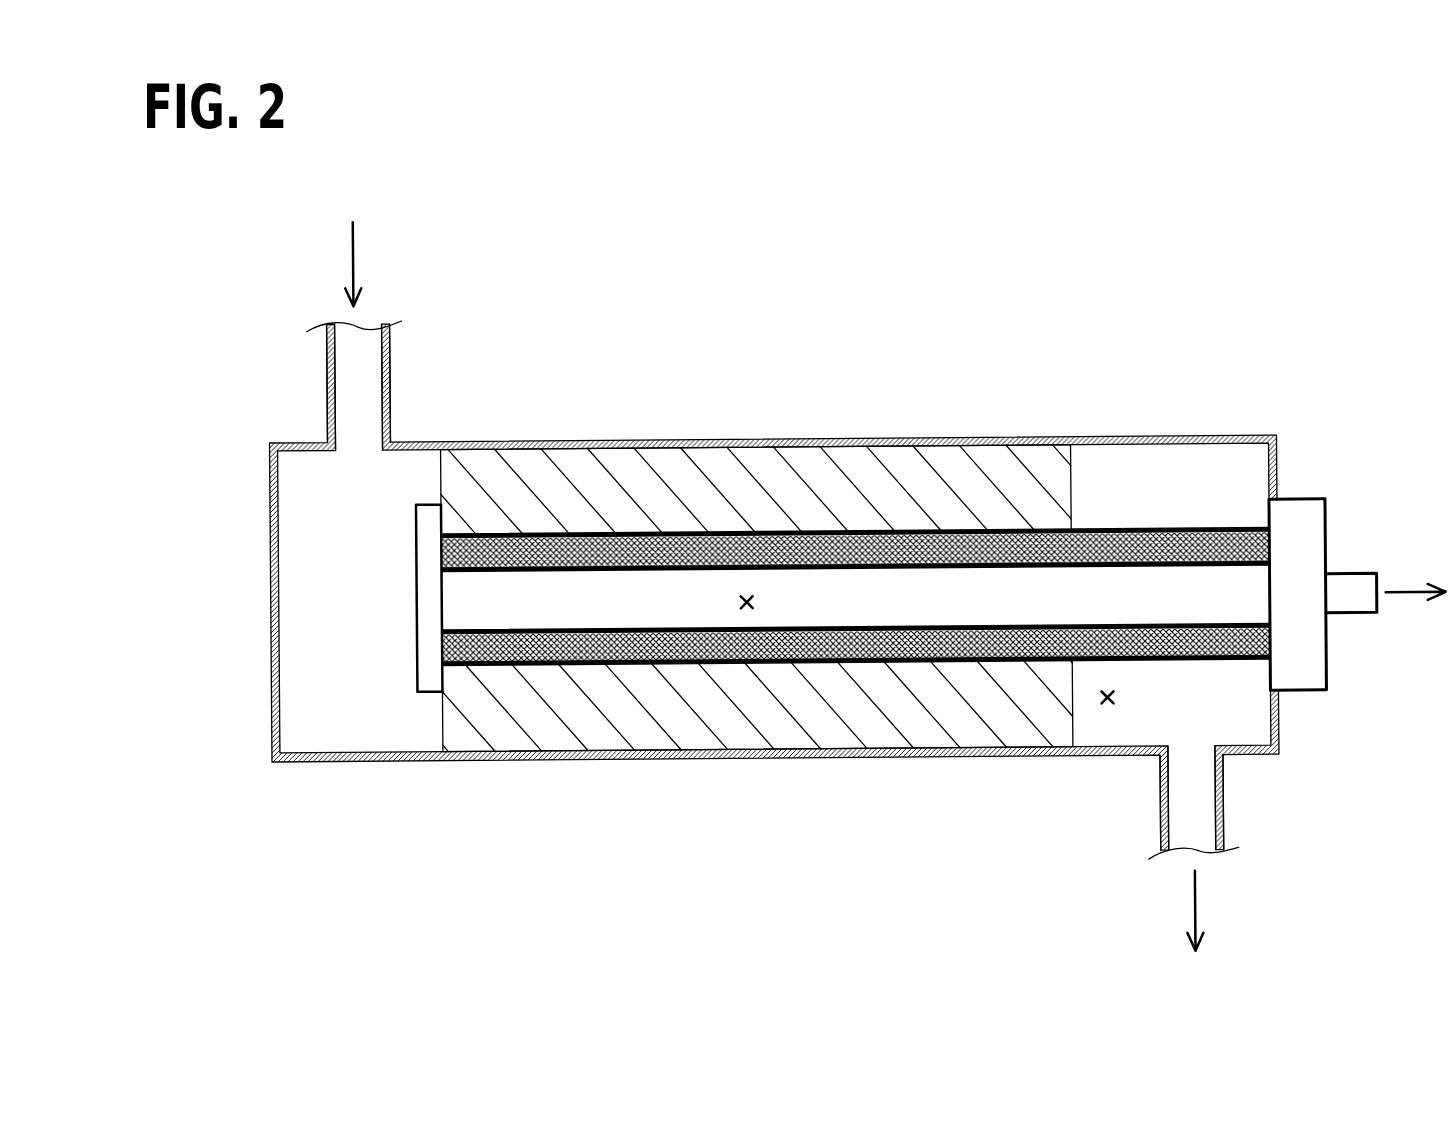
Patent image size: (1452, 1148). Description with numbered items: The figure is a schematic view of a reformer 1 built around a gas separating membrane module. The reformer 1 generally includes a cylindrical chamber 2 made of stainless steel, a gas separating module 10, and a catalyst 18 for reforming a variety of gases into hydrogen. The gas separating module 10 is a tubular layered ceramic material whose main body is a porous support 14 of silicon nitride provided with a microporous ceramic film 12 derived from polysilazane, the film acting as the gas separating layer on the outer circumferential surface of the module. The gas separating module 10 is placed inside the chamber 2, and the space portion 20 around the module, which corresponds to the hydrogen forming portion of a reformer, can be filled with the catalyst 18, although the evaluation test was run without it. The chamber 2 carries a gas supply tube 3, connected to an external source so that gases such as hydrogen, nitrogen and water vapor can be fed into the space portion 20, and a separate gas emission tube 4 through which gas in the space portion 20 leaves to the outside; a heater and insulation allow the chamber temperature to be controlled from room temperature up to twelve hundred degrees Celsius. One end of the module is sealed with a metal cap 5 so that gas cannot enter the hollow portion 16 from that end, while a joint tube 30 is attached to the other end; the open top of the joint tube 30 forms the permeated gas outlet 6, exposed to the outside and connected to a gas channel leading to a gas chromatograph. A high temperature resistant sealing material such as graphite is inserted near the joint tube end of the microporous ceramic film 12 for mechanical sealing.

The reformer 1 is at (858, 571).
The cylindrical chamber 2 is at (774, 590).
The gas supply tube 3 is at (359, 387).
The gas emission tube 4 is at (1192, 798).
The metal cap 5 is at (429, 598).
The permeated gas outlet 6 is at (1351, 592).
The gas separating module 10 is at (855, 596).
The microporous ceramic film 12 is at (855, 549).
The porous support 14 is at (856, 644).
The hollow portion 16 is at (747, 602).
The catalyst 18 is at (757, 598).
The space portion 20 is at (1107, 697).
The joint tube 30 is at (1297, 594).